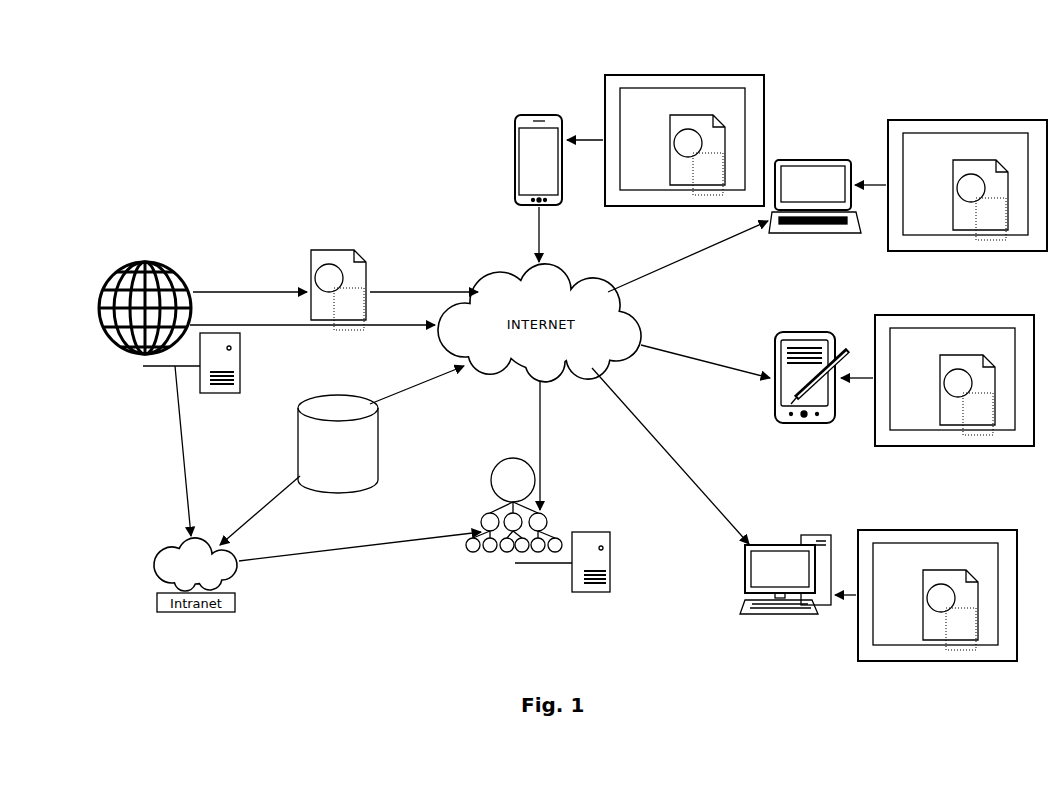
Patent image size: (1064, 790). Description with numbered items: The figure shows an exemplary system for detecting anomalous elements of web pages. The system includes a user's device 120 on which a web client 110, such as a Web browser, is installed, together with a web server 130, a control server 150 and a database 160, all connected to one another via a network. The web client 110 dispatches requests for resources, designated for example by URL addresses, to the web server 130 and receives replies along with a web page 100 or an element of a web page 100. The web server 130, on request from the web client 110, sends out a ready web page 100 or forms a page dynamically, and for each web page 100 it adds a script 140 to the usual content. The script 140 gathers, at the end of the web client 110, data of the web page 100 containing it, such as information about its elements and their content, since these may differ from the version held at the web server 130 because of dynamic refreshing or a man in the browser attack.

The web page 100 is at (717, 105).
The web client 110 is at (661, 73).
The user's device 120 is at (563, 122).
The web server 130 is at (190, 292).
The script 140 is at (708, 192).
The control server 150 is at (548, 508).
The database 160 is at (368, 397).